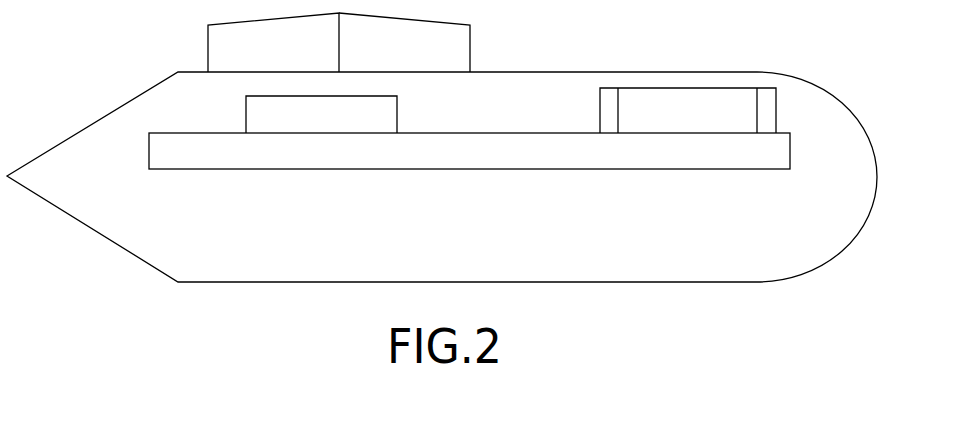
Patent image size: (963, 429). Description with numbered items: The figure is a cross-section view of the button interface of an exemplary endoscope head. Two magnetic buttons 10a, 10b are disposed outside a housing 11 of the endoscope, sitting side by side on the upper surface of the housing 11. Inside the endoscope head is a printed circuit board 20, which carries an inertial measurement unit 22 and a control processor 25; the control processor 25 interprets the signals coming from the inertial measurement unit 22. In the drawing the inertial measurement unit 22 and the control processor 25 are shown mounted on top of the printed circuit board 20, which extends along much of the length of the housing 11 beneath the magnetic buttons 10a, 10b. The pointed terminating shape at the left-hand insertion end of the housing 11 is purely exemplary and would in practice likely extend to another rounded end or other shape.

The housing 11 is at (587, 72).
The magnetic button 10a is at (263, 55).
The magnetic button 10b is at (418, 55).
The control processor 25 is at (313, 125).
The inertial measurement unit 22 is at (673, 118).
The substrate / circuit board 20 is at (455, 160).